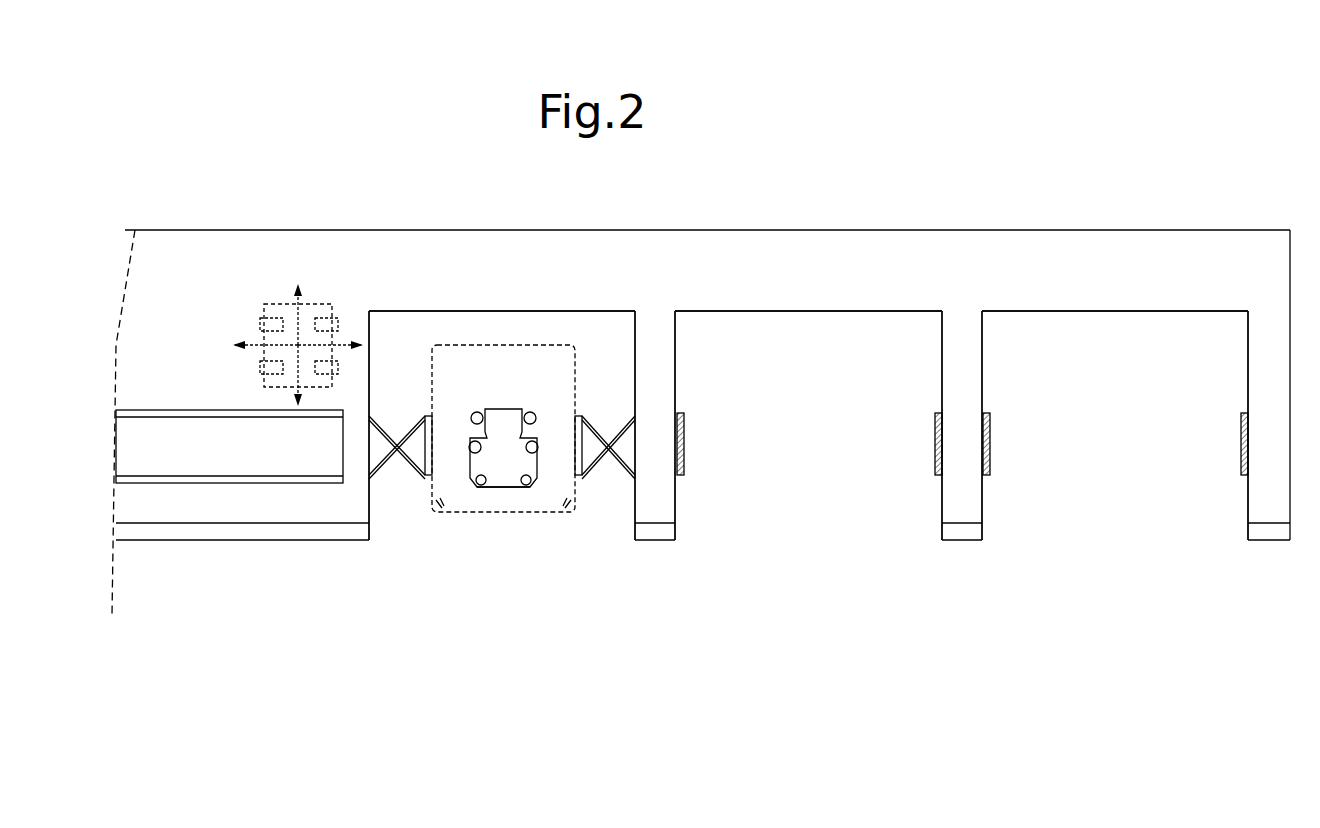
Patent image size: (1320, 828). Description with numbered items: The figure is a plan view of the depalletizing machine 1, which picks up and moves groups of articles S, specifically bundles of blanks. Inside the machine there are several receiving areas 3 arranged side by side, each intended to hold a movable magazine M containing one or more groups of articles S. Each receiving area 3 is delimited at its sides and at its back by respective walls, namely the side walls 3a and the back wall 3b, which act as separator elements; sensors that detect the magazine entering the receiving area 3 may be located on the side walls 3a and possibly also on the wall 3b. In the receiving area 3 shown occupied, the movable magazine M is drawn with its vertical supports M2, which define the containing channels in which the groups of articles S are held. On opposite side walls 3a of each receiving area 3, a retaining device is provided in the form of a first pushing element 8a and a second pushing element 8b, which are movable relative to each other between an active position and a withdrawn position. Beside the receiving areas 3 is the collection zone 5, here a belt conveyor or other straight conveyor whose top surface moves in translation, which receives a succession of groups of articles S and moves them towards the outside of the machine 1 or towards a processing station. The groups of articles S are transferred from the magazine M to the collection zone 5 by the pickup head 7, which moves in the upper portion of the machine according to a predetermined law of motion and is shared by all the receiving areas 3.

The depalletizing machine 1 is at (1222, 197).
The receiving area 3 is at (829, 508).
The side walls 3a is at (372, 503).
The back wall 3b is at (483, 310).
The collection zone 5 is at (247, 498).
The pickup head 7 is at (338, 297).
The first pushing element 8a is at (386, 440).
The second pushing element 8b is at (585, 447).
The movable magazine M is at (461, 518).
The vertical supports M2 is at (532, 410).
The groups of articles S is at (503, 498).